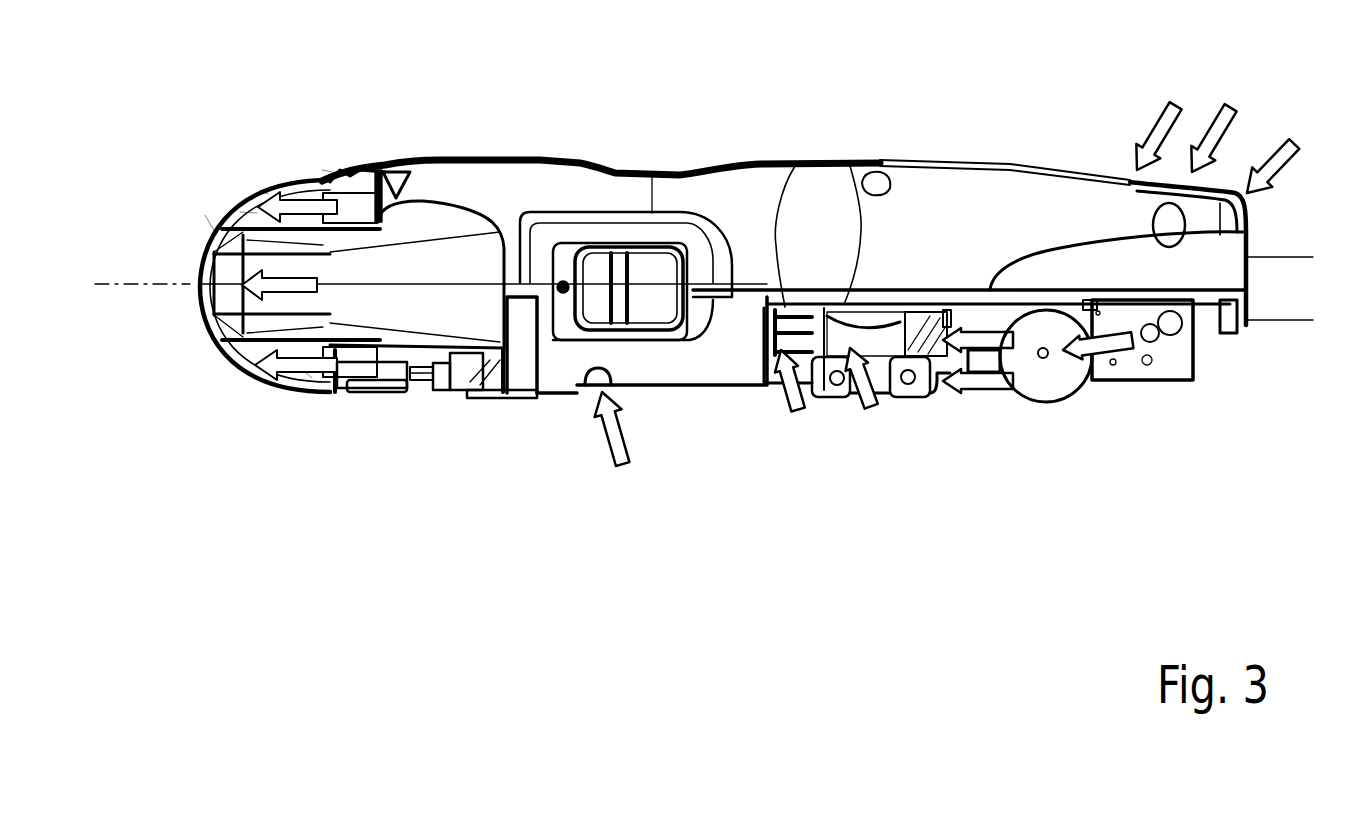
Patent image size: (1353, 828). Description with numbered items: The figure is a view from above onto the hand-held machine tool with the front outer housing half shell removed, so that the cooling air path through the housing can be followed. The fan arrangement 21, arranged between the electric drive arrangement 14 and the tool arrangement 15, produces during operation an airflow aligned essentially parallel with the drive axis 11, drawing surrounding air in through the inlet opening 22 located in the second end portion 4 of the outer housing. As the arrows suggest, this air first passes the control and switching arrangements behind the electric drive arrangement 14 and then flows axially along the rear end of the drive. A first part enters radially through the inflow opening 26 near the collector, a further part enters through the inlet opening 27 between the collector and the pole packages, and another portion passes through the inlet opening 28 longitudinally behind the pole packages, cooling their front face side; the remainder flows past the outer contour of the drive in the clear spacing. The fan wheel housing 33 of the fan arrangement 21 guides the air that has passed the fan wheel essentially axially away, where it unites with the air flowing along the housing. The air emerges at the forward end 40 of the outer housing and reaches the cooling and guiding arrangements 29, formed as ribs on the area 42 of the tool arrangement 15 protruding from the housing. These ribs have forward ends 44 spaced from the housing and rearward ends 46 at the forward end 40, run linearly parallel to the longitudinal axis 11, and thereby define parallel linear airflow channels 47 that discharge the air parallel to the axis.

The second end portion 4 is at (1110, 157).
The drive axis 11 is at (148, 283).
The electric drive arrangement 14 is at (727, 373).
The tool arrangement 15 is at (232, 333).
The fan arrangement 21 is at (518, 412).
The inlet opening 22 is at (1213, 190).
The inflow opening 26 is at (852, 318).
The inlet opening for cooling air 27 is at (800, 330).
The inlet opening 28 is at (620, 392).
The cooling and guiding arrangements 29 is at (302, 195).
The fan wheel housing 33 is at (497, 382).
The forward end 40 is at (327, 170).
The area 42 is at (225, 228).
The forward ends 44 is at (257, 213).
The rearward ends 46 is at (370, 165).
The airflow channels 47 is at (267, 192).